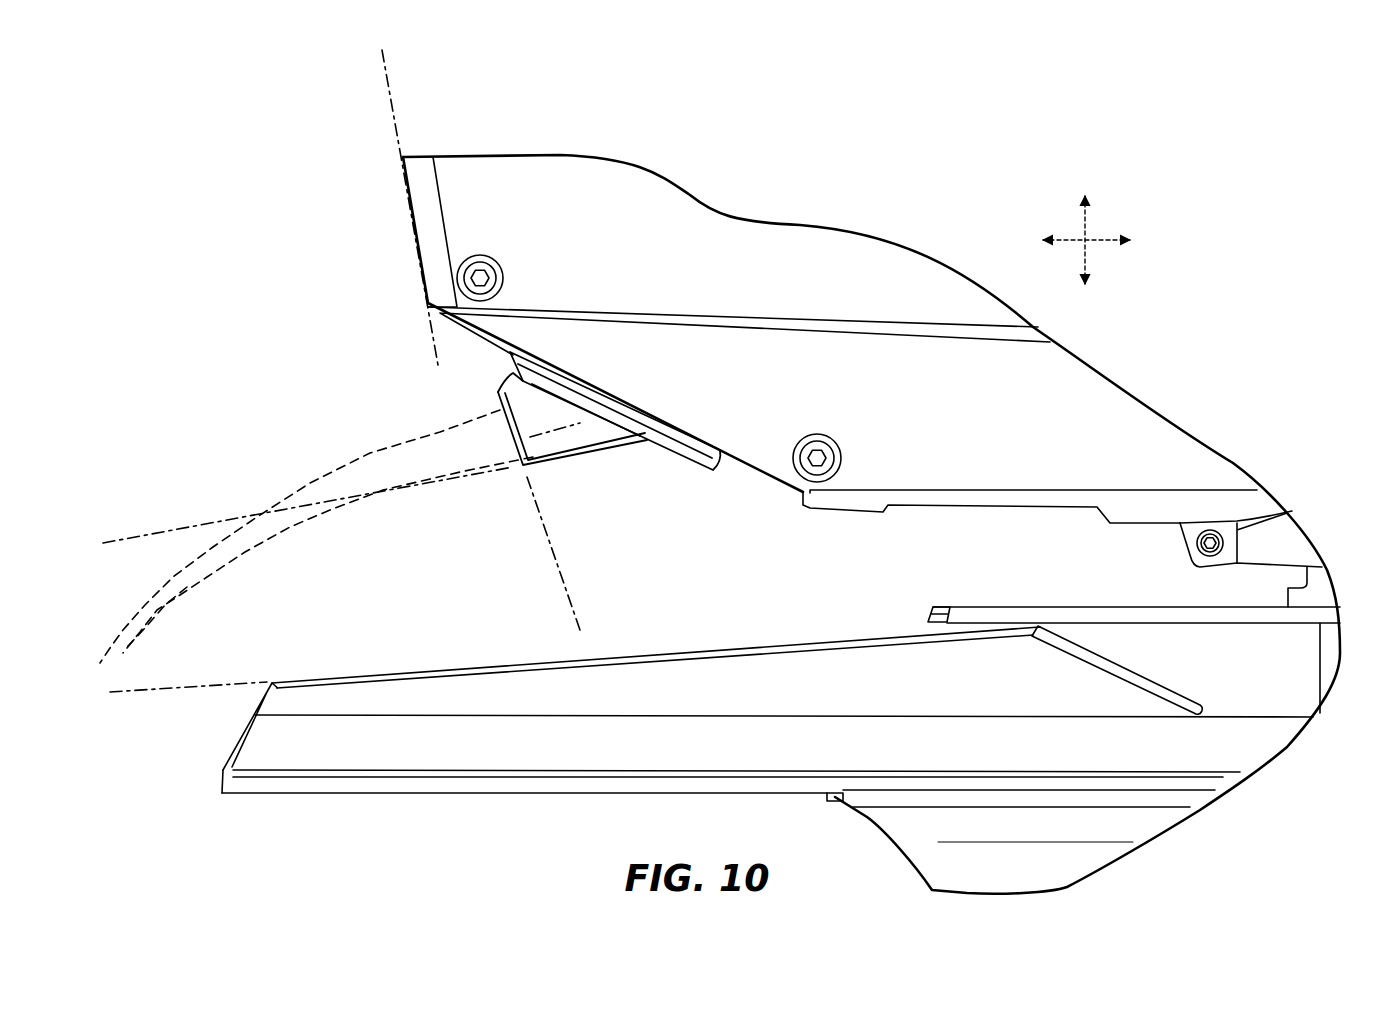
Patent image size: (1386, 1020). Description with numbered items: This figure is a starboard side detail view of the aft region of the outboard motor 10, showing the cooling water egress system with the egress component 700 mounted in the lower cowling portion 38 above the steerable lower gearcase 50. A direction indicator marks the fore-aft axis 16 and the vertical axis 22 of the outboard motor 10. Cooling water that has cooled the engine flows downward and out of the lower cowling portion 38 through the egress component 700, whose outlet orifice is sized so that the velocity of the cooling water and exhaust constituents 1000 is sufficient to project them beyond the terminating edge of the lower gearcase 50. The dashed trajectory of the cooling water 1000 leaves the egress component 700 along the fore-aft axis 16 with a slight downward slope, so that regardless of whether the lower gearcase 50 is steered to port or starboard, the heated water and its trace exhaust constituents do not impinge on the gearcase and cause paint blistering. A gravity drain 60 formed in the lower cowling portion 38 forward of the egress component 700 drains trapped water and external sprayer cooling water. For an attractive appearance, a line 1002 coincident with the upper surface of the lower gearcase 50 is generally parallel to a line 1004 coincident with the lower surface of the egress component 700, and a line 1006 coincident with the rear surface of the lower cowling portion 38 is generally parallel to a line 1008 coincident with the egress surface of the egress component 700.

The outboard motor 10 is at (236, 185).
The fore-aft axis 16 is at (1102, 245).
The vertical axis 22 is at (1087, 223).
The lower cowling portion 38 is at (430, 227).
The lower gearcase 50 is at (240, 740).
The gravity drain 60 is at (933, 518).
The egress component 700 is at (552, 443).
The cooling water and exhaust constituents 1000 is at (370, 453).
The line coincident with upper surface of lower gearcase 1002 is at (210, 683).
The line coincident with lower surface of egress component 1004 is at (190, 527).
The line coincident with rear surface of lower cowling portion 1006 is at (397, 128).
The line coincident with egress surface of egress component 1008 is at (563, 567).